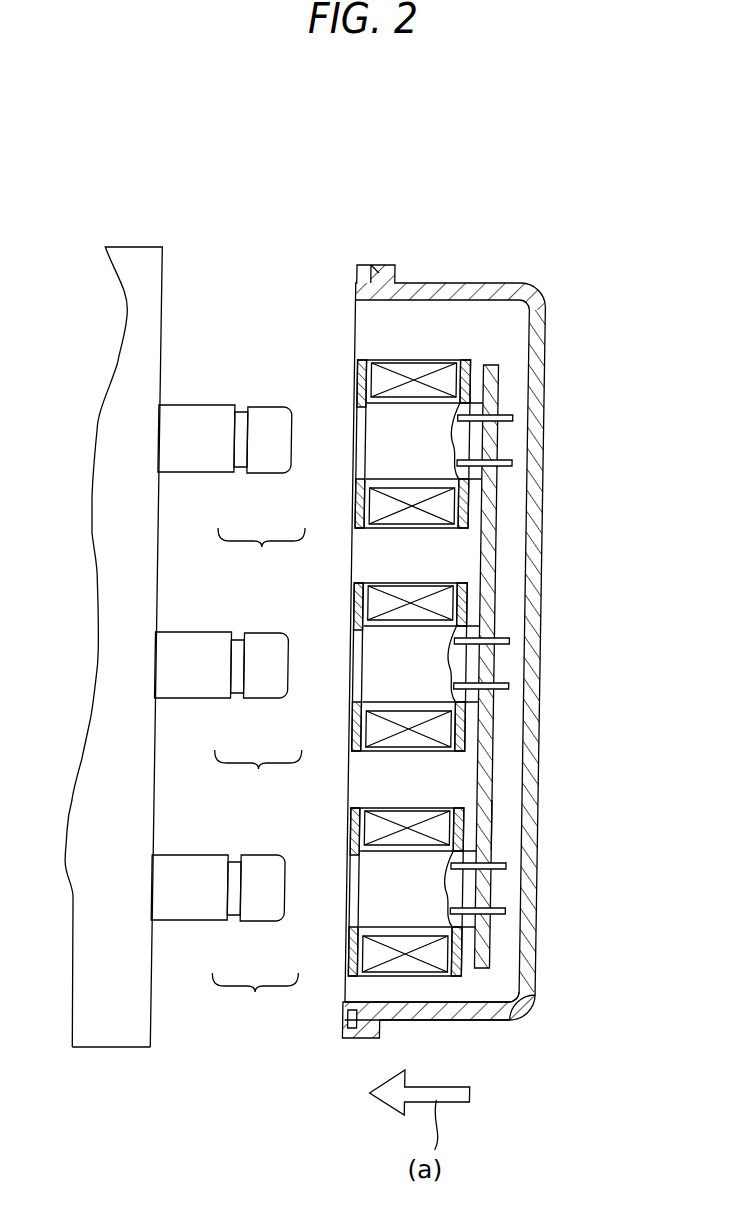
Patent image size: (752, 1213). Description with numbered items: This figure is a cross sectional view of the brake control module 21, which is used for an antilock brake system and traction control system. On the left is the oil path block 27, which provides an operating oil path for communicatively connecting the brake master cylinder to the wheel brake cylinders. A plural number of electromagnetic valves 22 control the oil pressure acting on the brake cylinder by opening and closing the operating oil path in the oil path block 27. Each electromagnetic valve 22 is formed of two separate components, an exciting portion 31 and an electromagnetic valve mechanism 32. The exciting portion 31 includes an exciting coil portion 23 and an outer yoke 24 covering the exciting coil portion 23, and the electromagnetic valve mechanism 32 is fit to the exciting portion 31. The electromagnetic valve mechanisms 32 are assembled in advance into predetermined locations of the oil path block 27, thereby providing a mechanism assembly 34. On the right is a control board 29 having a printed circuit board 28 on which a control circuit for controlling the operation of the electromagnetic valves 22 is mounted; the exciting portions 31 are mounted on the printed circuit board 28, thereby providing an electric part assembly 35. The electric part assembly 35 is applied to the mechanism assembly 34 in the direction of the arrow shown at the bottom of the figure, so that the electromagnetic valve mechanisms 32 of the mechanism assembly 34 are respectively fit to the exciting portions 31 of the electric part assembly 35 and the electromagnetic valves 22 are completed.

The brake control module 21 is at (462, 272).
The electromagnetic valve 22 is at (258, 773).
The exciting coil portion 23 is at (413, 368).
The outer yoke 24 is at (364, 380).
The oil path block 27 is at (153, 265).
The printed circuit board 28 is at (506, 760).
The control board 29 is at (503, 827).
The exciting portion 31 is at (386, 518).
The electromagnetic valve mechanism 32 is at (205, 465).
The mechanism assembly 34 is at (123, 1038).
The electric part assembly 35 is at (532, 1020).